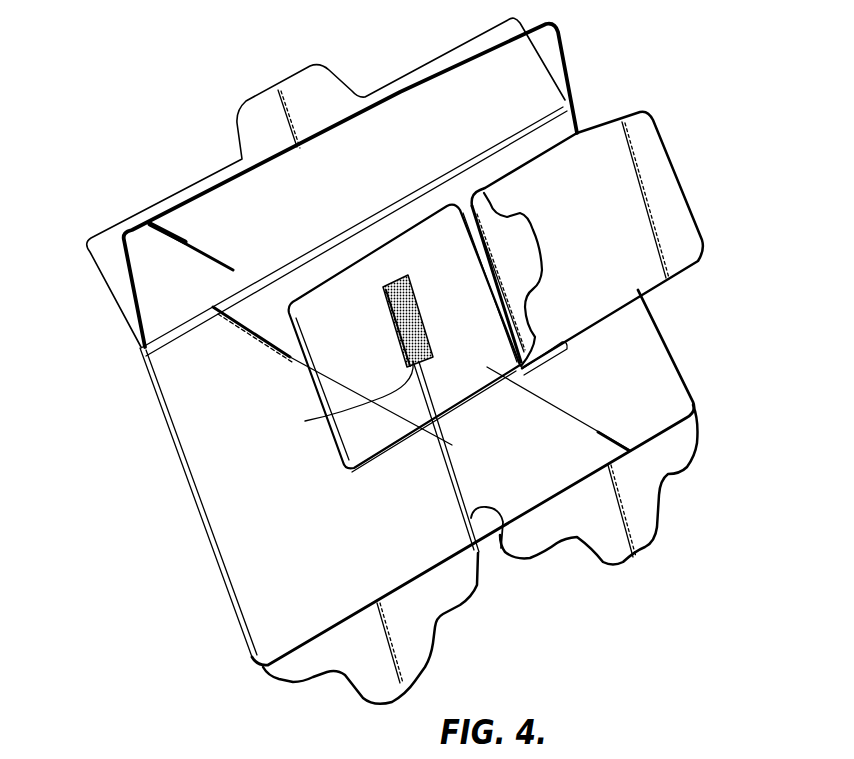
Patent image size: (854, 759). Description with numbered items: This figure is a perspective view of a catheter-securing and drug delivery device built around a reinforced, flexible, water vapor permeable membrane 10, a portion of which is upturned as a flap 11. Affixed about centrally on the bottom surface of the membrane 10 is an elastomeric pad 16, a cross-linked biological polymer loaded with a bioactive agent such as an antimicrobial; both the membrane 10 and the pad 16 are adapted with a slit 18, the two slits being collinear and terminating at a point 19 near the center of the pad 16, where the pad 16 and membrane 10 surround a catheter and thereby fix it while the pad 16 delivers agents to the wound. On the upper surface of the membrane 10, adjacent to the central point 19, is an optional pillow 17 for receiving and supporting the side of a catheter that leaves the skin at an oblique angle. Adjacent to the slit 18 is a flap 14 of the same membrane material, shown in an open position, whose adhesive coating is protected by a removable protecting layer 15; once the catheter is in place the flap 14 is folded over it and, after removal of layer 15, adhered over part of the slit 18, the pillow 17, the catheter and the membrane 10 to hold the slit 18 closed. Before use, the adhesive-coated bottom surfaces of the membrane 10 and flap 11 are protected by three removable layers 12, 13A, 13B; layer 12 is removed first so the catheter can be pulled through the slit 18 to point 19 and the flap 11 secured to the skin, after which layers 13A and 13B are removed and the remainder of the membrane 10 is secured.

The membrane 10 is at (233, 477).
The flap 11 is at (547, 44).
The removable layer 12 is at (103, 245).
The removable layer 13A is at (343, 670).
The removable layer 13B is at (662, 463).
The flap 14 is at (687, 272).
The removable protecting layer 15 is at (673, 202).
The elastomeric pad 16 is at (354, 473).
The pillow 17 is at (413, 298).
The slit 18 is at (501, 548).
The point 19 is at (376, 456).